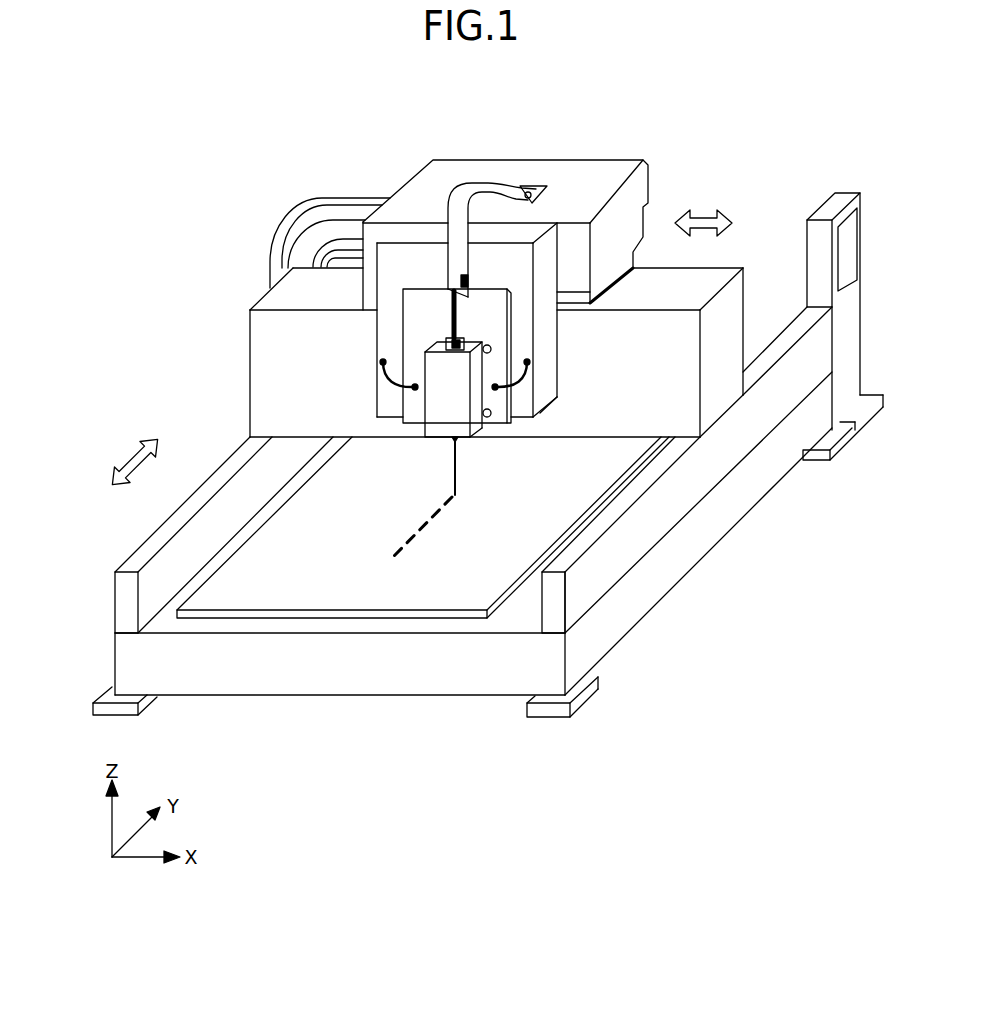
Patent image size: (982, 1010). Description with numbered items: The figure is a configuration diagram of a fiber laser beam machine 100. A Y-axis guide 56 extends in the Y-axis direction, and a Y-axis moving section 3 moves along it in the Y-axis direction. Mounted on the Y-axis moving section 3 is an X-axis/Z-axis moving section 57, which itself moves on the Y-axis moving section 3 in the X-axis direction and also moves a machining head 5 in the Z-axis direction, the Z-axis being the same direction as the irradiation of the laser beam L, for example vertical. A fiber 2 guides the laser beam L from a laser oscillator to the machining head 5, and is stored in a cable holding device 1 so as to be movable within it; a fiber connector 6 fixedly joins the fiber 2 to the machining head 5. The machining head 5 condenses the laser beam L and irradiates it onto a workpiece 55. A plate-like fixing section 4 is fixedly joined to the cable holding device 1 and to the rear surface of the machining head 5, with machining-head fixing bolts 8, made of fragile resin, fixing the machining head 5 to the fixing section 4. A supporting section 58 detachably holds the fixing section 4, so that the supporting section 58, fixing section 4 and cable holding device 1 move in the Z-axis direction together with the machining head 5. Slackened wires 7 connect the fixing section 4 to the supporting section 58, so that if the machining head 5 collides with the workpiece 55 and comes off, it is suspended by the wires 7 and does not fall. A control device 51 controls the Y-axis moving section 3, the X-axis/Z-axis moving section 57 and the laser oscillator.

The fiber laser beam machine 100 is at (738, 121).
The cable holding device 1 is at (457, 205).
The fiber 2 is at (458, 322).
The Y-axis moving section 3 is at (653, 280).
The fixing section 4 is at (427, 303).
The machining head 5 is at (437, 404).
The fiber connector 6 is at (447, 341).
The wires 7 is at (411, 383).
The machining-head fixing bolts 8 is at (491, 349).
The control device 51 is at (823, 198).
The workpiece 55 is at (510, 515).
The Y-axis guide 56 is at (122, 598).
The X-axis/Z-axis moving section 57 is at (510, 177).
The supporting section 58 is at (535, 233).
The laser beam L is at (457, 482).